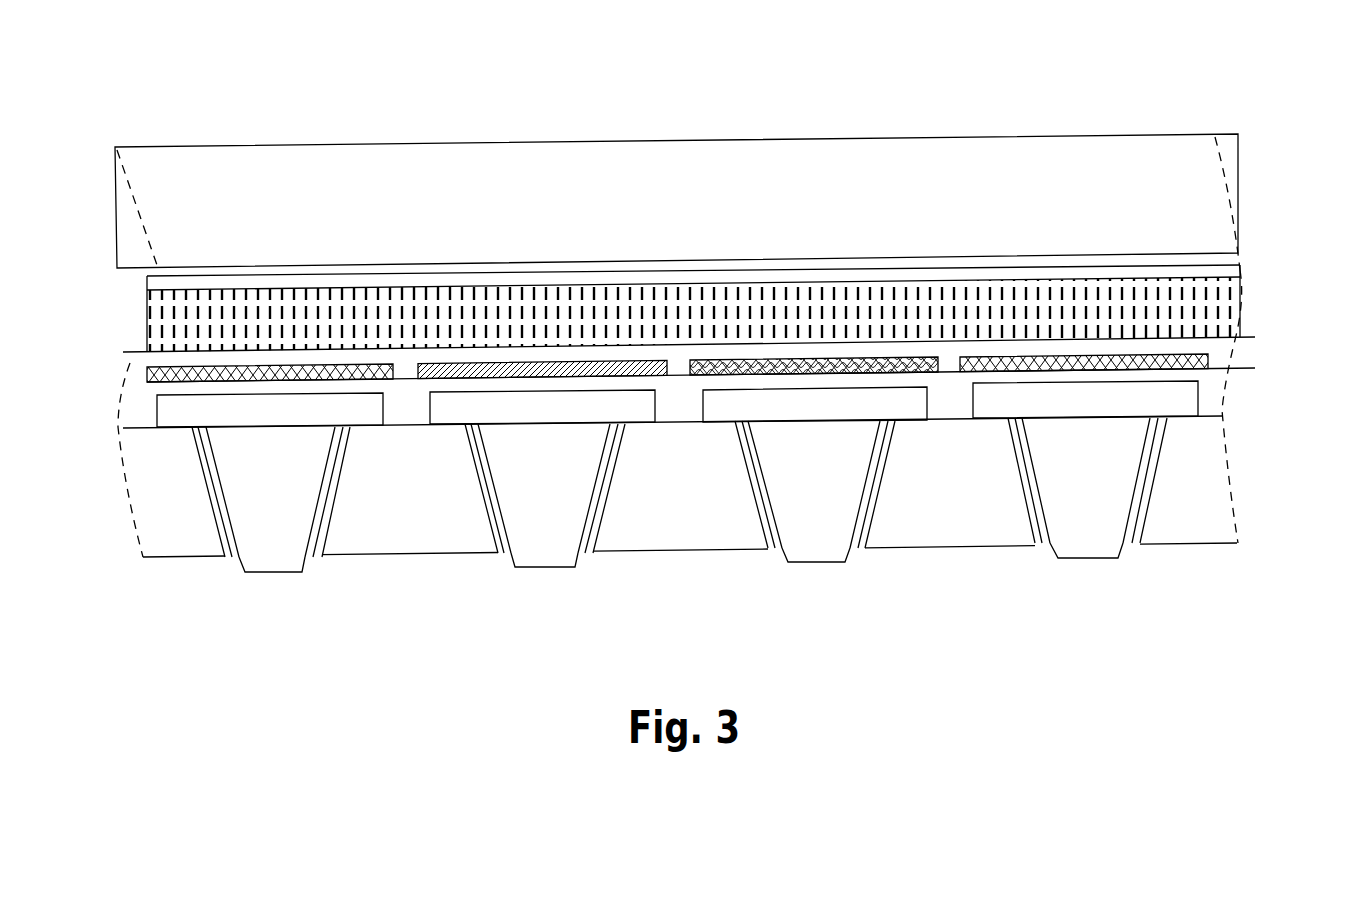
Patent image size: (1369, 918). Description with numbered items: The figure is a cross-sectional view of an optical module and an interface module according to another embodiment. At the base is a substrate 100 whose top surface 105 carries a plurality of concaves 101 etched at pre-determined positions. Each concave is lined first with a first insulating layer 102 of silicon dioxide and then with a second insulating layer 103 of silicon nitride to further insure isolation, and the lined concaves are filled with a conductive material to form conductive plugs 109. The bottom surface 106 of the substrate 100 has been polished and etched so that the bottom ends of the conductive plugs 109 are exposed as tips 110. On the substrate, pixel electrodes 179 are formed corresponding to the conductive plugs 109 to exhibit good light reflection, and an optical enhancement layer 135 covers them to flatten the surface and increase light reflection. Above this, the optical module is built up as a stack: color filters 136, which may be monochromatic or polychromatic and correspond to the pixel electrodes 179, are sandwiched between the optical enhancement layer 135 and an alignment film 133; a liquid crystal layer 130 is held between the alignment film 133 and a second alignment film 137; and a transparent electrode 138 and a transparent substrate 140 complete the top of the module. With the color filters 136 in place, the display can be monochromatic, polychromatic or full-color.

The substrate 100 is at (1193, 487).
The concaves 101 is at (1162, 442).
The first insulating layers 102 is at (1017, 430).
The second insulating layers 103 is at (883, 423).
The top surface 105 is at (410, 423).
The bottom surface 106 is at (1092, 560).
The conductive plugs 109 is at (823, 453).
The tips 110 is at (277, 565).
The liquid crystal layer 130 is at (1148, 287).
The alignment film 133 is at (570, 358).
The optical enhancement layer 135 is at (745, 378).
The color filters 136 is at (505, 345).
The alignment film 137 is at (1098, 277).
The transparent electrode 138 is at (945, 267).
The transparent substrate 140 is at (817, 168).
The pixel electrodes 179 is at (1115, 398).